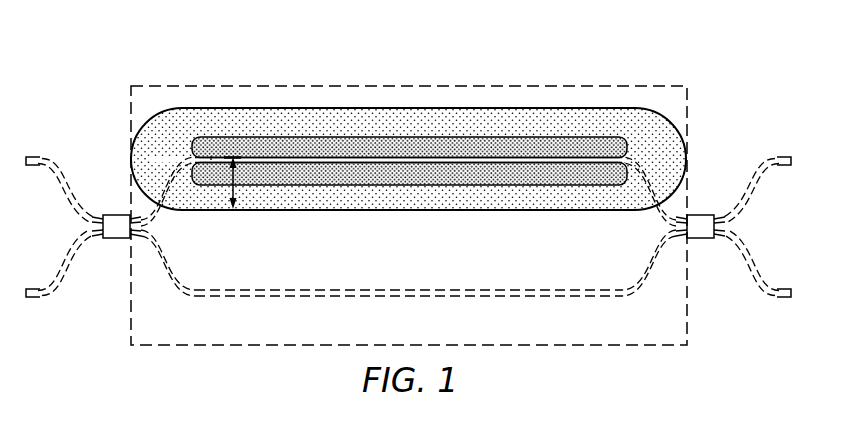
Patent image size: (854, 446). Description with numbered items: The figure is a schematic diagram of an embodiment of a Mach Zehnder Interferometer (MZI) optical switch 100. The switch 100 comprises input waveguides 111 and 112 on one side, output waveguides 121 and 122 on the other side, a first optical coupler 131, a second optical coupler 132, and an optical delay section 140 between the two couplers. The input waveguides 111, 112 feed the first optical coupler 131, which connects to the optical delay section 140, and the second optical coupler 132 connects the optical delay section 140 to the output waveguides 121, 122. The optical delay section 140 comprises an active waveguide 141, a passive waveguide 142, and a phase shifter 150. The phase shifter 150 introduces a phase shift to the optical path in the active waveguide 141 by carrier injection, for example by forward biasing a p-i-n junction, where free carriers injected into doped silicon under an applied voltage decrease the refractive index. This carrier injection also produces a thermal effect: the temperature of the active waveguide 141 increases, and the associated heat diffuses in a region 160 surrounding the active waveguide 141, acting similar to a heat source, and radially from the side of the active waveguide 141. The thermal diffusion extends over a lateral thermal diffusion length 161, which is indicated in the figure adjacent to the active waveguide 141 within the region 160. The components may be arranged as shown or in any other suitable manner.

The MZI optical switch 100 is at (96, 24).
The input waveguide 111 is at (40, 157).
The input waveguide 112 is at (40, 298).
The output waveguide 121 is at (777, 157).
The output waveguide 122 is at (777, 298).
The first optical coupler 131 is at (116, 238).
The second optical coupler 132 is at (701, 238).
The optical delay section 140 is at (252, 86).
The active waveguide 141 is at (602, 158).
The passive waveguide 142 is at (480, 290).
The phase shifter 150 is at (502, 137).
The region surrounding the active waveguide 160 is at (410, 108).
The lateral thermal diffusion length 161 is at (240, 187).